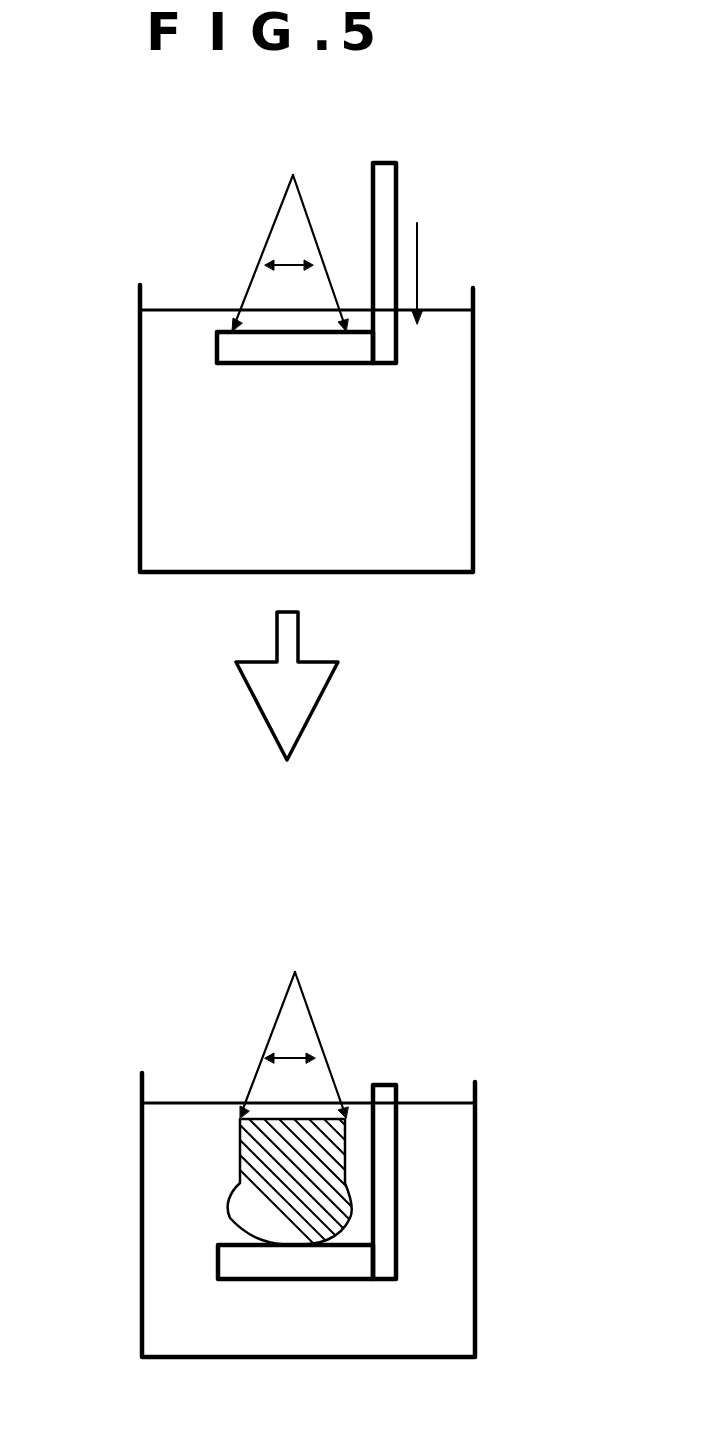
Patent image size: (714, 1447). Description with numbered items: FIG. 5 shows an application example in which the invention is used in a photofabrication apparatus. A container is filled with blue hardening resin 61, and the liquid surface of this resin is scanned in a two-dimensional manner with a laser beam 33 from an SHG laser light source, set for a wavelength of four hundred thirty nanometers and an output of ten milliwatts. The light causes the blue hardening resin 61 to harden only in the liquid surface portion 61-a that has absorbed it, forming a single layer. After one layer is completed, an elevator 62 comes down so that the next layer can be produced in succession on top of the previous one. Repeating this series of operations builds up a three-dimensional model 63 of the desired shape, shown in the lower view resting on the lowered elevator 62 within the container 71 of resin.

The laser beam 33 is at (252, 277).
The blue hardening resin 61 is at (465, 410).
The liquid surface portion 61-a is at (233, 328).
The elevator 62 is at (385, 275).
The three-dimensional model 63 is at (227, 1202).
The water tank 71 is at (450, 1222).